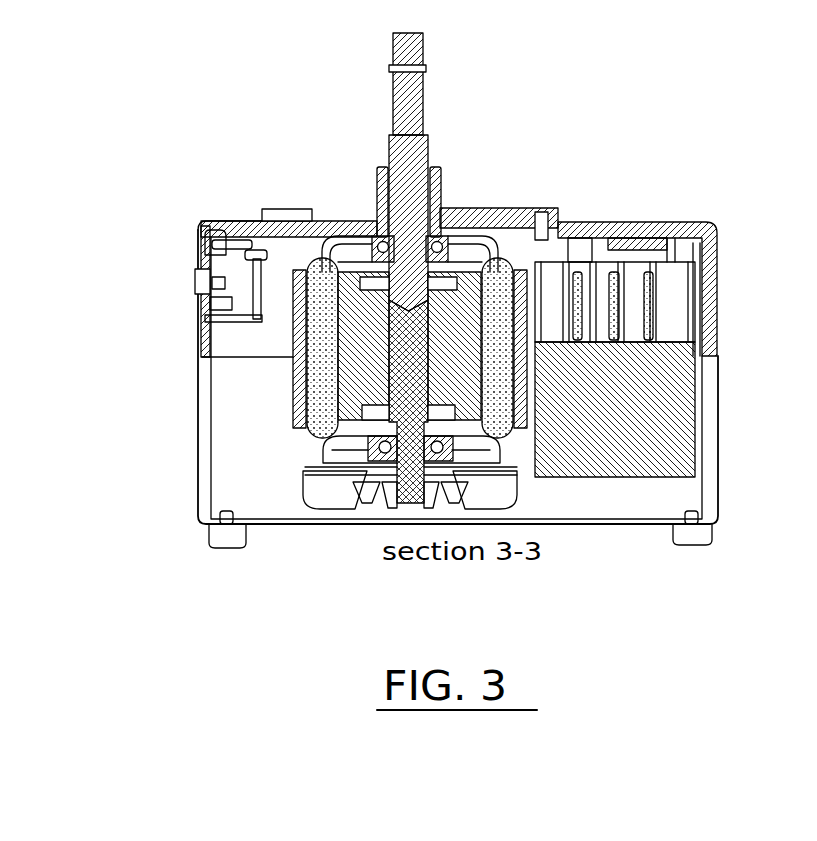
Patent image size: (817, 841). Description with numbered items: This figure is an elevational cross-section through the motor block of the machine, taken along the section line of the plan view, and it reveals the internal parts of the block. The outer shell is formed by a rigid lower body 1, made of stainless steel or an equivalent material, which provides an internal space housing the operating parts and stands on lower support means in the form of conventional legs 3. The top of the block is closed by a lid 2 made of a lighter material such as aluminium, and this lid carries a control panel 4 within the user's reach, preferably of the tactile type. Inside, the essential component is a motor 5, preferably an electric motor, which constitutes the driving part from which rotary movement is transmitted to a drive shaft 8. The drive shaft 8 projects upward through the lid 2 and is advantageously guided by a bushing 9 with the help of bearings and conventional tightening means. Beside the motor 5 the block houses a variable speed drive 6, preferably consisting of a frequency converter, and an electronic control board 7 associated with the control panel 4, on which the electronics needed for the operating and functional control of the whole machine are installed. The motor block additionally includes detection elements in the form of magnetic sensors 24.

The lower body 1 is at (197, 462).
The lid 2 is at (718, 303).
The legs 3 is at (227, 540).
The control panel 4 is at (193, 343).
The motor 5 is at (318, 392).
The variable speed drive 6 is at (663, 415).
The electronic control board 7 is at (218, 225).
The drive shaft 8 is at (390, 95).
The bushing 9 is at (439, 192).
The magnetic sensors 24 is at (195, 283).